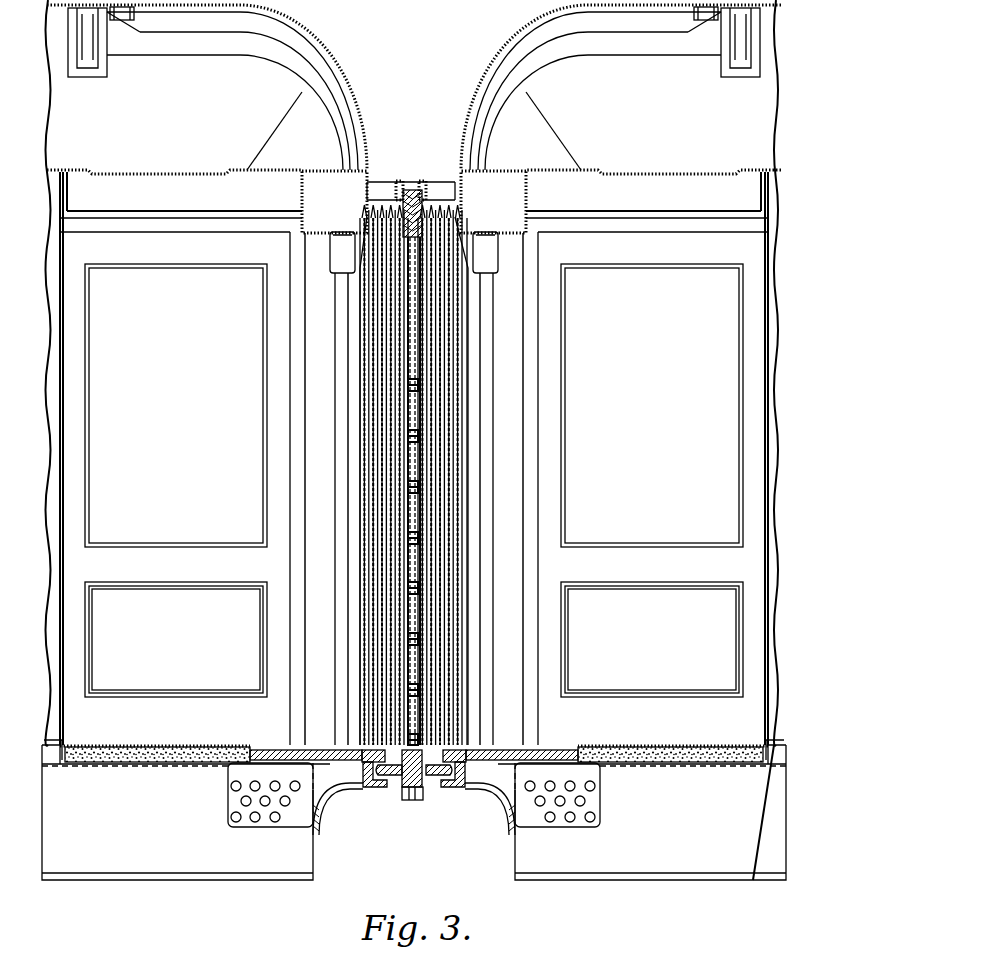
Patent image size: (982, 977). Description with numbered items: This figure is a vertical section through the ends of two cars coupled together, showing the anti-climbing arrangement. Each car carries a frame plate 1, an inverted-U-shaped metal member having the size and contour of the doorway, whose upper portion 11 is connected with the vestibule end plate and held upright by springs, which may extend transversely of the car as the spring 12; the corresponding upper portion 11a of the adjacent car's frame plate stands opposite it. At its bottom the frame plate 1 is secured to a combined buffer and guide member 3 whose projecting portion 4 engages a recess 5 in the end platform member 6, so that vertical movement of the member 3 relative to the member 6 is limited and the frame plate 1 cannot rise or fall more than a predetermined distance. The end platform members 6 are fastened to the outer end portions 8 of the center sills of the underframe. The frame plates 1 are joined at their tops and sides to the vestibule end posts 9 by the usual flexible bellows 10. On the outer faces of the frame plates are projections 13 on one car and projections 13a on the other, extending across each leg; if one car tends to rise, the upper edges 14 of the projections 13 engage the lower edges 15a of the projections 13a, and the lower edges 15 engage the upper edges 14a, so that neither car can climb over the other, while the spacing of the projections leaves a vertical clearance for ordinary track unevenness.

The frame plate 1 is at (405, 412).
The combined buffer and guide member 3 is at (418, 801).
The projecting portion 4 is at (394, 778).
The recess 5 is at (370, 785).
The end platform member 6 is at (338, 800).
The outer end portion of center sill 8 is at (403, 800).
The vestibule end post 9 is at (414, 489).
The flexible bellows 10 is at (390, 515).
The upper portion of frame plate 11 is at (406, 190).
The diaphragm face plate 11a is at (408, 353).
The spring 12 is at (381, 193).
The projection 13 is at (415, 410).
The projection 13a is at (410, 462).
The upper edge of projection 14 is at (418, 383).
The upper edge of projection 14a is at (410, 433).
The lower edge of projection 15 is at (418, 441).
The lower edge of projection 15a is at (410, 492).